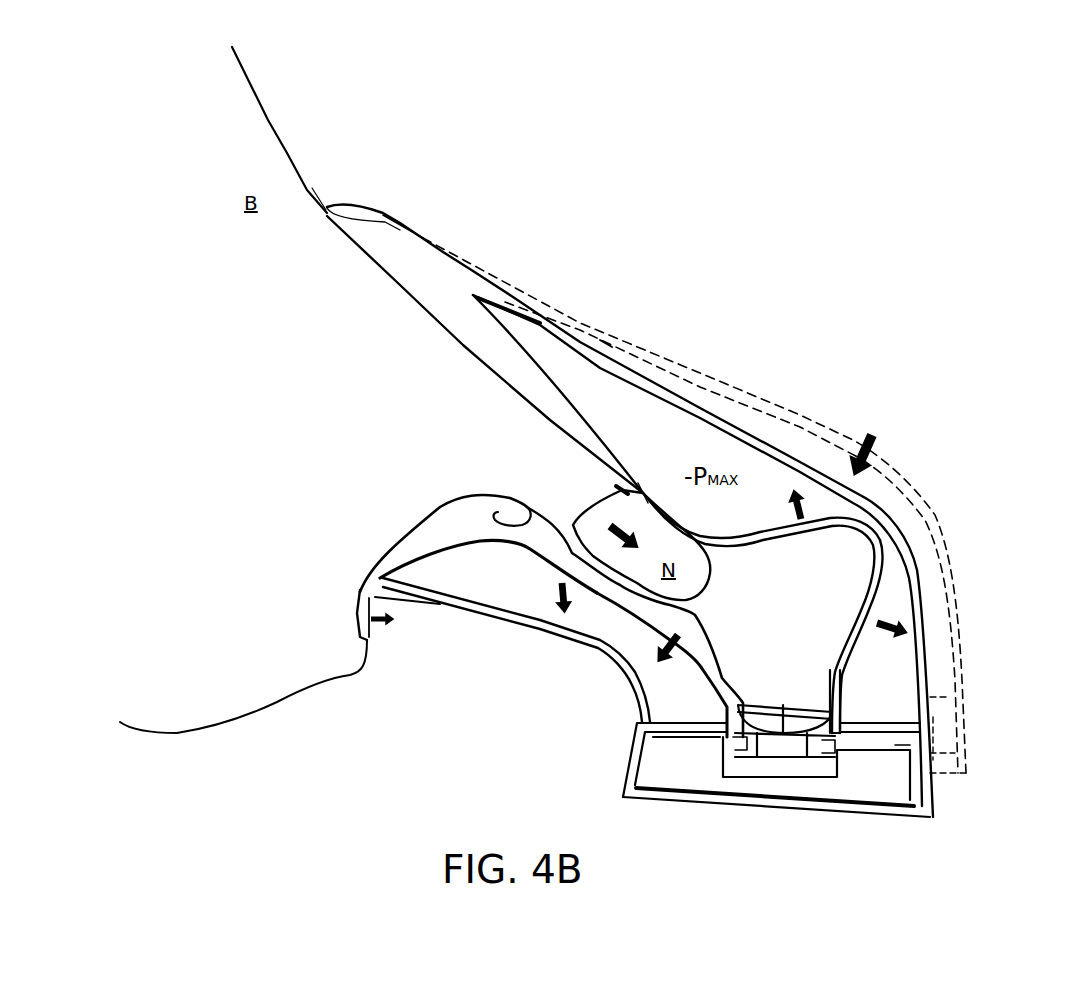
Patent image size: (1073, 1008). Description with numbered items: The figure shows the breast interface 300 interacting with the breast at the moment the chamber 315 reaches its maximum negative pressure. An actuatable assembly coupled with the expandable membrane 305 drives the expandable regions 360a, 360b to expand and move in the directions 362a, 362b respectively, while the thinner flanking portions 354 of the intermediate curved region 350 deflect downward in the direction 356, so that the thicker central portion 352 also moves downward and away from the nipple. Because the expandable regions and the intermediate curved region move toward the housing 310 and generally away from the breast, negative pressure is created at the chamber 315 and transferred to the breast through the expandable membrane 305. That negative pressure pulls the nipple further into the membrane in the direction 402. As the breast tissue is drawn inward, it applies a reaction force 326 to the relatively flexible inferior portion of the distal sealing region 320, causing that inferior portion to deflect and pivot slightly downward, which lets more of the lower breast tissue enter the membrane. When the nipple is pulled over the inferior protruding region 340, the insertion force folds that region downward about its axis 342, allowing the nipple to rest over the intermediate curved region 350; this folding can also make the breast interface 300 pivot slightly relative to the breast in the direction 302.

The breast interface 300 is at (822, 220).
The direction 302 is at (853, 452).
The expandable membrane 305 is at (643, 493).
The housing 310 is at (660, 387).
The chamber 315 is at (773, 480).
The distal sealing region 320 is at (358, 592).
The reaction force 326 is at (377, 630).
The inferior protruding region 340 is at (527, 506).
The axis 342 is at (494, 511).
The intermediate curved region 350 is at (603, 590).
The thicker central portion 352 is at (623, 607).
The thinner flanking portions 354 is at (517, 617).
The direction 356 is at (553, 553).
The expandable region 360a is at (812, 540).
The expandable region 360b is at (870, 608).
The direction 362a is at (807, 512).
The direction 362b is at (883, 637).
The direction 402 is at (592, 502).